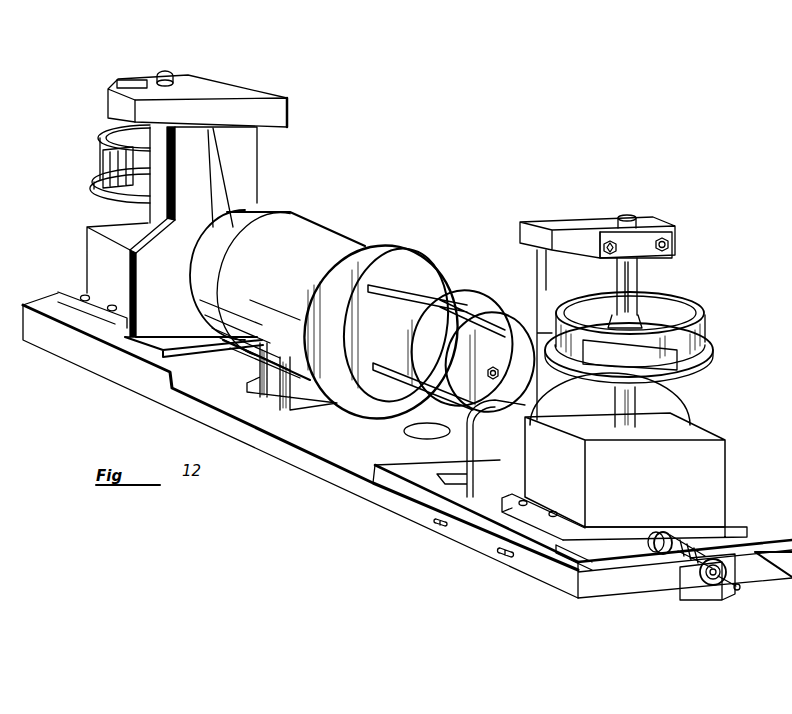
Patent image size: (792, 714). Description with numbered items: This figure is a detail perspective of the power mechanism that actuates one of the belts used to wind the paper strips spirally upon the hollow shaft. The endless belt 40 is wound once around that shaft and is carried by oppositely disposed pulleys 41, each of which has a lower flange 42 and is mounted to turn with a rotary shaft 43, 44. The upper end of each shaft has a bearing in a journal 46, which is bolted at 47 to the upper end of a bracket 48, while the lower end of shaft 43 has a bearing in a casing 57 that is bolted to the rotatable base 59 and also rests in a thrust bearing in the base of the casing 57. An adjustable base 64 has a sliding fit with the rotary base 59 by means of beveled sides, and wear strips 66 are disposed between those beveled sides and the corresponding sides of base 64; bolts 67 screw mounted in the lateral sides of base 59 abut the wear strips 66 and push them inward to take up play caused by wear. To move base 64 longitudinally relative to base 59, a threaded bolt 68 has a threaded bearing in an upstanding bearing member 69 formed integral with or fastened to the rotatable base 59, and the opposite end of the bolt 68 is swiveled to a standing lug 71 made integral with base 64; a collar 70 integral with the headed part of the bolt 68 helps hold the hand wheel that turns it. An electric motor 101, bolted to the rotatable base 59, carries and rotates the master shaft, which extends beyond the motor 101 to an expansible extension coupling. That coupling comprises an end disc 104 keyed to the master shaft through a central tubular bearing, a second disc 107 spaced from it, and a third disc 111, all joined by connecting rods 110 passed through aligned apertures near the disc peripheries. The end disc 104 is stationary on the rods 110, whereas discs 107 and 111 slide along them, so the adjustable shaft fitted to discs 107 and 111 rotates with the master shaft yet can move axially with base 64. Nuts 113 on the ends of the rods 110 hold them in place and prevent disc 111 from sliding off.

The endless belt 40 is at (100, 163).
The pulley 41 is at (117, 138).
The lower flange 42 is at (100, 187).
The rotary shaft 43 is at (638, 277).
The rotary shaft 44 is at (163, 70).
The journal 46 is at (137, 78).
The bolt 47 is at (612, 238).
The bracket 48 is at (247, 157).
The casing 57 is at (712, 442).
The rotatable base 59 is at (397, 502).
The adjustable base 64 is at (512, 520).
The wear strip 66 is at (578, 567).
The bolt 67 is at (437, 522).
The threaded bolt 68 is at (670, 557).
The upstanding bearing member 69 is at (684, 592).
The collar 70 is at (704, 590).
The standing lug 71 is at (673, 538).
The electric motor 101 is at (343, 227).
The end disc 104 is at (407, 280).
The second disc 107 is at (470, 307).
The connecting rod 110 is at (443, 290).
The third disc 111 is at (520, 323).
The nut 113 is at (493, 383).